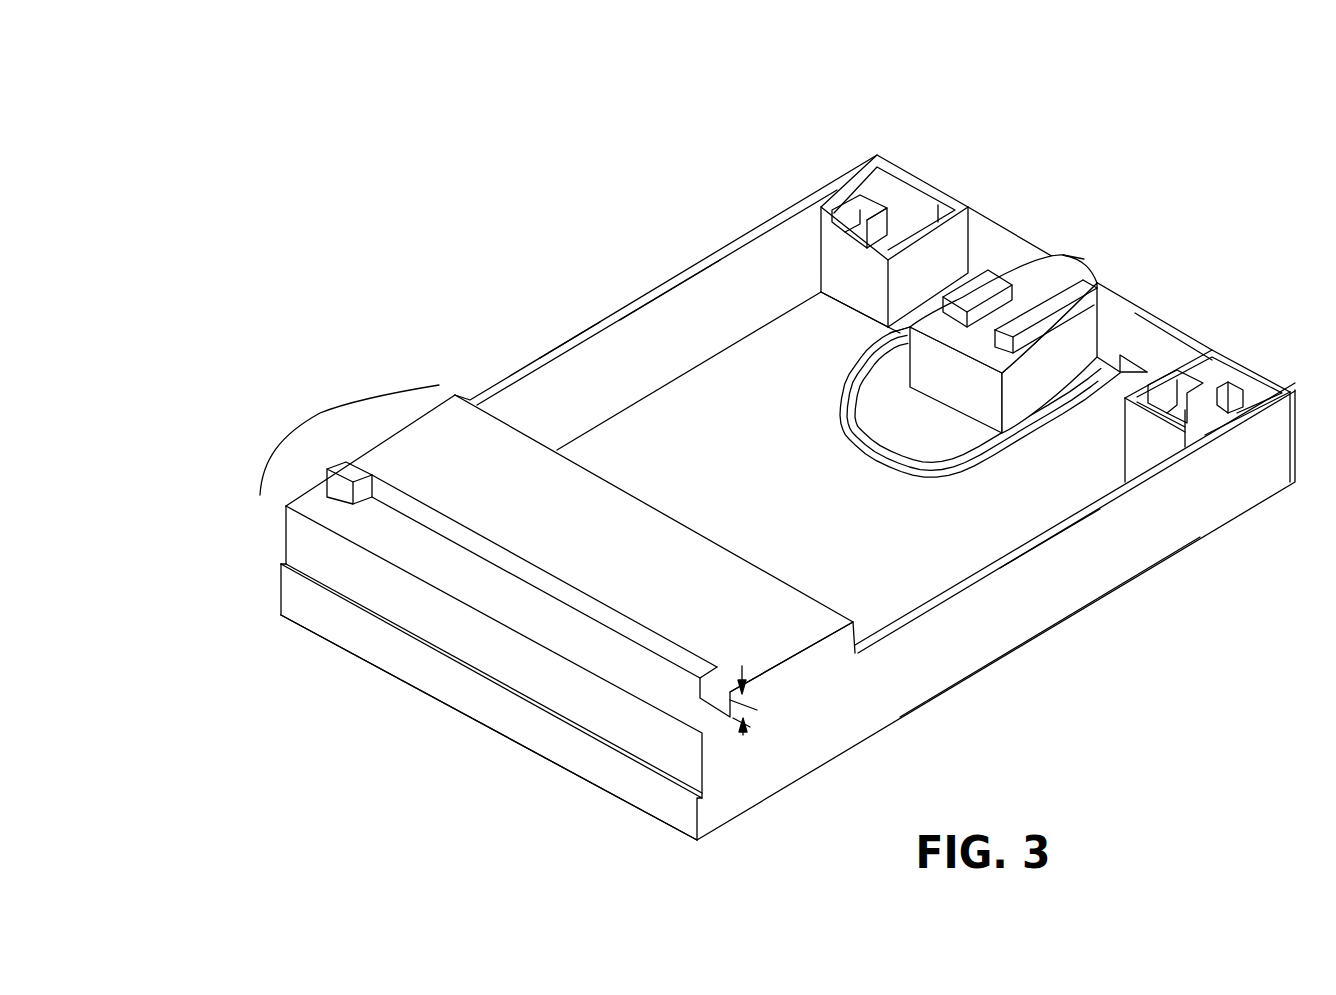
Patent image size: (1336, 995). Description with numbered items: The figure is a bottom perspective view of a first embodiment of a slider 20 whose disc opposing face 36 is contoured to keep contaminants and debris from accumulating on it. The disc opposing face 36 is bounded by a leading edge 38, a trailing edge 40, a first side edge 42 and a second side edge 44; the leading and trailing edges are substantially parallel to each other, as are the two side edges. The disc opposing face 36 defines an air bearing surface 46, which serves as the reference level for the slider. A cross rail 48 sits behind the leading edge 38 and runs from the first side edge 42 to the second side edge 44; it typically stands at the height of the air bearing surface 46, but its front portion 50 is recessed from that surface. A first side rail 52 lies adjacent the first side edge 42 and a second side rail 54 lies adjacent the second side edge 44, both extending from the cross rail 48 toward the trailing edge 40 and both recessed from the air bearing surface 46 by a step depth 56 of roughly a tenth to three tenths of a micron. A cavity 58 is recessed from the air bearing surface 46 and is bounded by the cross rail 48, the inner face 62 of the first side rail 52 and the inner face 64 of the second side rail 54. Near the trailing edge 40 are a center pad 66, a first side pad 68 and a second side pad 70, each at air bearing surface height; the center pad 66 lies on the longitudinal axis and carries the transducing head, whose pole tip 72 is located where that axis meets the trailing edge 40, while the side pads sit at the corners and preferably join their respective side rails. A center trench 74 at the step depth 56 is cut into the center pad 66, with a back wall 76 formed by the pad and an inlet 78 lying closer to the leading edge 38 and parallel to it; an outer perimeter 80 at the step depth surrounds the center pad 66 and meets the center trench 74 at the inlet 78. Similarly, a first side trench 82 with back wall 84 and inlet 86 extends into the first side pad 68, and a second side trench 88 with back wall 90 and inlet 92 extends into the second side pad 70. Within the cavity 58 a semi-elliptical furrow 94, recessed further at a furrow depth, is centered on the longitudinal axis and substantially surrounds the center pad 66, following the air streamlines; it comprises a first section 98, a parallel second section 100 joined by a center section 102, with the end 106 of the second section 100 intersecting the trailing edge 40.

The slider 20 is at (582, 140).
The disc opposing face 36 is at (436, 433).
The leading edge 38 is at (477, 630).
The trailing edge 40 is at (1113, 350).
The first side edge 42 is at (540, 358).
The second side edge 44 is at (965, 587).
The air bearing surface 46 is at (763, 636).
The cross rail 48 is at (352, 420).
The front portion 50 is at (387, 540).
The first side rail 52 is at (617, 317).
The second side rail 54 is at (1037, 540).
The step depth 56 is at (744, 733).
The cavity 58 is at (713, 290).
The inner face 62 is at (737, 383).
The inner face 64 is at (987, 563).
The center pad 66 is at (1000, 299).
The first side pad 68 is at (884, 206).
The second side pad 70 is at (1227, 399).
The pole tip 72 is at (1062, 252).
The center trench 74 is at (998, 317).
The back wall 76 is at (1077, 261).
The inlet 78 is at (983, 337).
The outer perimeter 80 is at (1108, 279).
The first side trench 82 is at (860, 220).
The back wall 84 is at (887, 200).
The inlet 86 is at (852, 235).
The second side trench 88 is at (1243, 413).
The back wall 90 is at (1197, 390).
The inlet 92 is at (1163, 420).
The furrow 94 is at (966, 409).
The first section 98 is at (888, 347).
The second section 100 is at (1060, 437).
The center section 102 is at (870, 458).
The end 106 is at (1130, 375).